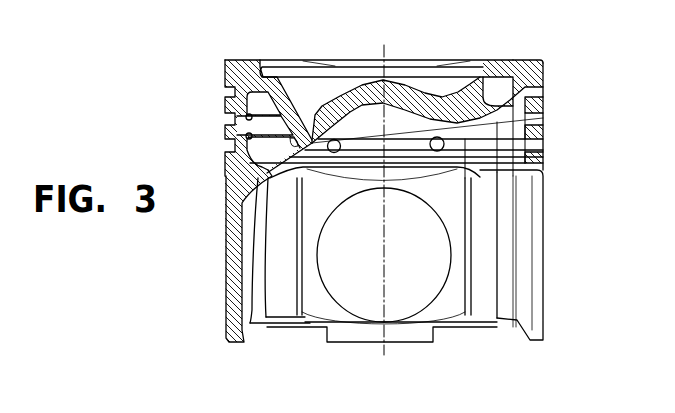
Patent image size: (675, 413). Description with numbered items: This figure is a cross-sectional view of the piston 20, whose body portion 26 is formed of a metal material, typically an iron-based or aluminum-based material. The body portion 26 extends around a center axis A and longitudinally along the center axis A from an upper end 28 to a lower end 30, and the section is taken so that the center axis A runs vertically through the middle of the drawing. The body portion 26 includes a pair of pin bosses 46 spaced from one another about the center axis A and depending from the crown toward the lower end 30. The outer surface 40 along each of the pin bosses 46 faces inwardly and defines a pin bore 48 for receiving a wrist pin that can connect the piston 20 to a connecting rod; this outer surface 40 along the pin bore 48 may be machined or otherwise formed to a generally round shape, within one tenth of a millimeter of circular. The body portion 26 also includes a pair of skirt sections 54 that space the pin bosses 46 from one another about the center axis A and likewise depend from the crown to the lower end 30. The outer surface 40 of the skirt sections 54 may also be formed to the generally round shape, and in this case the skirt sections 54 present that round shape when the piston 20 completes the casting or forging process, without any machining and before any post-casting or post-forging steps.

The piston 20 is at (207, 67).
The upper end 28 is at (235, 60).
The body portion 26 is at (548, 190).
The lower end 30 is at (232, 345).
The outer surface 40 is at (438, 303).
The pin bosses 46 is at (452, 306).
The pin bore 48 is at (358, 277).
The skirt sections 54 is at (527, 292).
The center axis A is at (384, 58).